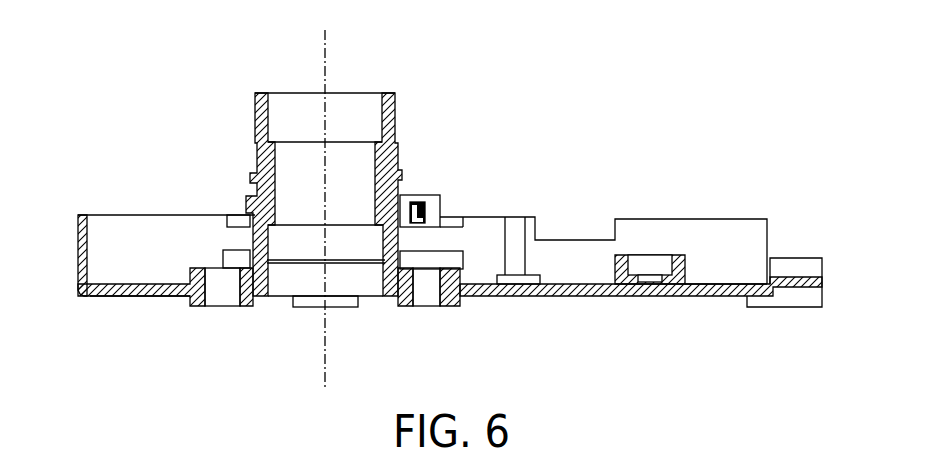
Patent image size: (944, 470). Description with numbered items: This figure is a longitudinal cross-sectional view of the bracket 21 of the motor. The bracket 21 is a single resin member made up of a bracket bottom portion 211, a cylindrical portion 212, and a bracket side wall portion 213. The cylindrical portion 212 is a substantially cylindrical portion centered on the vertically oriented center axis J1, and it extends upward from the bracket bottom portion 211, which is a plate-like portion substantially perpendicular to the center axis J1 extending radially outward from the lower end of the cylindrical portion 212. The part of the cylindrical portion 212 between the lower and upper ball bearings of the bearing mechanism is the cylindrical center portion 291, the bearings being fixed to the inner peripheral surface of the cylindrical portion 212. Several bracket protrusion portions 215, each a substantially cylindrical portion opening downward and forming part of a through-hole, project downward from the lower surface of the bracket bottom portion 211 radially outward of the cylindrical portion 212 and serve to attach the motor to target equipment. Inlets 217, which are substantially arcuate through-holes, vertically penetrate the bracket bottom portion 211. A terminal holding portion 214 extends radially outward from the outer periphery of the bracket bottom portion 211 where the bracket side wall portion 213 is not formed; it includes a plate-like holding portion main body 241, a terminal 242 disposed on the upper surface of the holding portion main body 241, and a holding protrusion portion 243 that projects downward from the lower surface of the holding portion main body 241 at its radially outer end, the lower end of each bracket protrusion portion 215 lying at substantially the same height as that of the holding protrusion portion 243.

The bracket 21 is at (140, 38).
The center axis J1 is at (323, 63).
The cylindrical portion 212 is at (260, 124).
The cylindrical center portion 291 is at (377, 173).
The bracket side wall portion 213 is at (88, 250).
The bracket bottom portion 211 is at (157, 293).
The inlet 217 is at (119, 288).
The bracket protrusion portion 215 is at (247, 300).
The terminal holding portion 214 is at (774, 346).
The terminal 242 is at (650, 280).
The holding portion main body 241 is at (710, 291).
The holding protrusion portion 243 is at (810, 297).